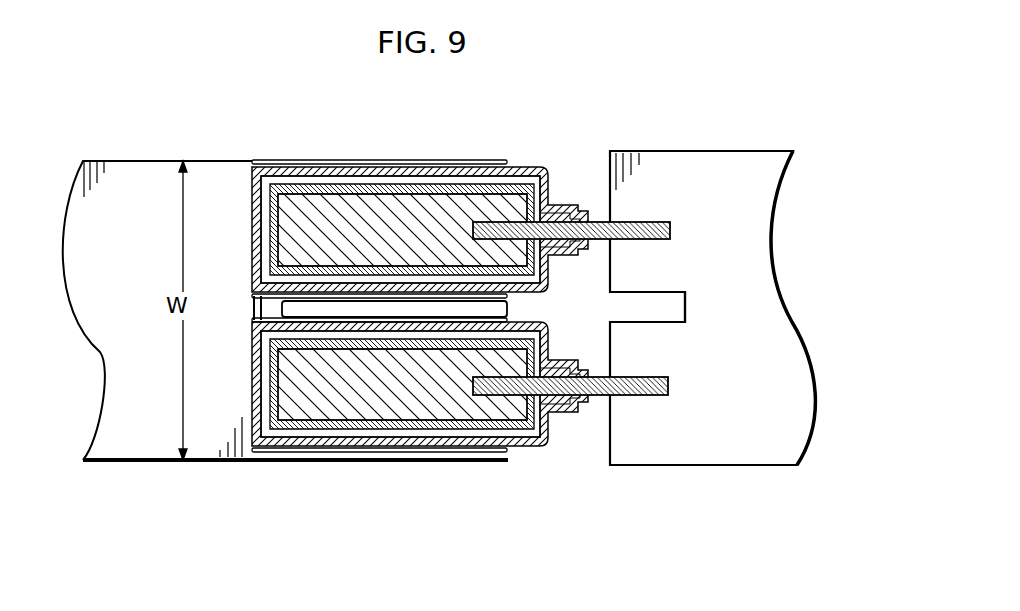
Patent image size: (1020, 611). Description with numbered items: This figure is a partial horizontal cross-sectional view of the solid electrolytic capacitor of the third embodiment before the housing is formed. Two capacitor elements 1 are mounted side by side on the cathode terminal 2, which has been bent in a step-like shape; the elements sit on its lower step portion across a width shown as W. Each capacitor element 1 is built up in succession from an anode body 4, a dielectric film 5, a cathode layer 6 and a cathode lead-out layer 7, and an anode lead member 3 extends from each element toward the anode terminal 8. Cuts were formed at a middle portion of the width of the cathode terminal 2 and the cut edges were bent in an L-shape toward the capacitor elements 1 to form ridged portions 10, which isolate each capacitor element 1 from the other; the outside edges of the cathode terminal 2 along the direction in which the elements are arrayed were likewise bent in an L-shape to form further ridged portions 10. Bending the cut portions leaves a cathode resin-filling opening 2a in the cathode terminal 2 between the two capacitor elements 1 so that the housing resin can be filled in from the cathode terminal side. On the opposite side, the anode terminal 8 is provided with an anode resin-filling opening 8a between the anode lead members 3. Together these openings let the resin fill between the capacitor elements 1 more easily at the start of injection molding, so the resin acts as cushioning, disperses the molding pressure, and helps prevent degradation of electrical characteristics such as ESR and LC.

The capacitor element 1 is at (447, 161).
The cathode terminal 2 is at (137, 182).
The cathode resin-filling opening 2a is at (476, 306).
The anode lead member 3 is at (593, 222).
The anode body 4 is at (397, 212).
The dielectric film 5 is at (348, 188).
The cathode layer 6 is at (317, 180).
The cathode lead-out layer 7 is at (300, 170).
The anode terminal 8 is at (730, 177).
The anode resin-filling opening 8a is at (672, 322).
The ridged portion 10 is at (292, 163).